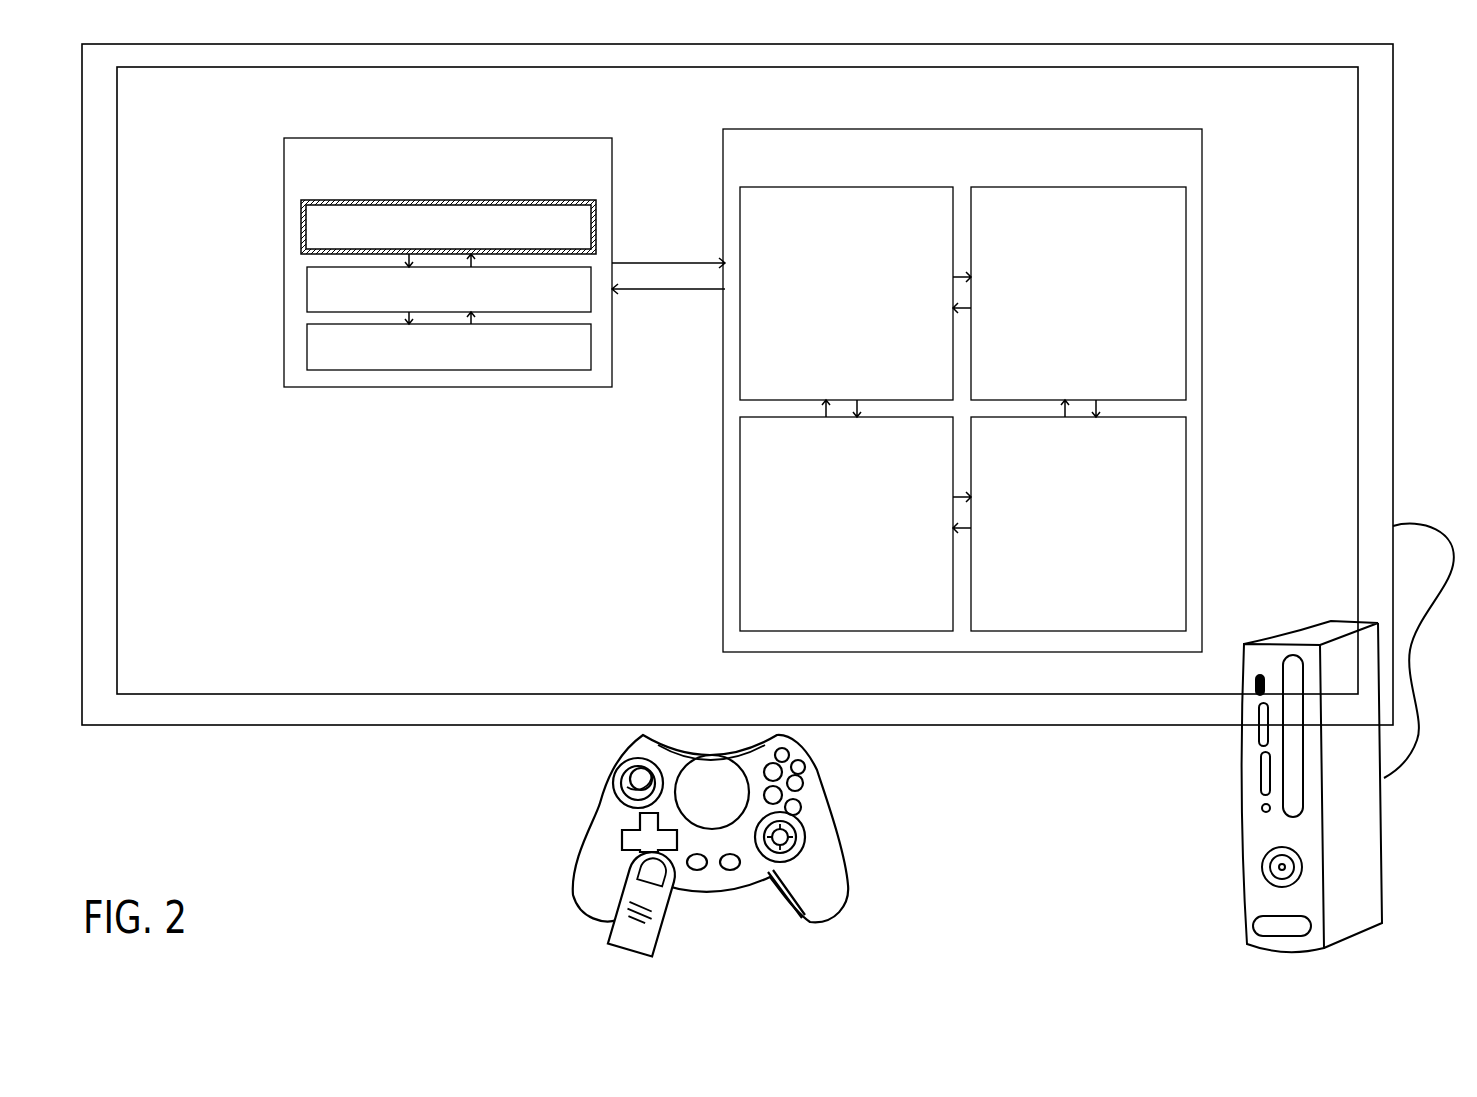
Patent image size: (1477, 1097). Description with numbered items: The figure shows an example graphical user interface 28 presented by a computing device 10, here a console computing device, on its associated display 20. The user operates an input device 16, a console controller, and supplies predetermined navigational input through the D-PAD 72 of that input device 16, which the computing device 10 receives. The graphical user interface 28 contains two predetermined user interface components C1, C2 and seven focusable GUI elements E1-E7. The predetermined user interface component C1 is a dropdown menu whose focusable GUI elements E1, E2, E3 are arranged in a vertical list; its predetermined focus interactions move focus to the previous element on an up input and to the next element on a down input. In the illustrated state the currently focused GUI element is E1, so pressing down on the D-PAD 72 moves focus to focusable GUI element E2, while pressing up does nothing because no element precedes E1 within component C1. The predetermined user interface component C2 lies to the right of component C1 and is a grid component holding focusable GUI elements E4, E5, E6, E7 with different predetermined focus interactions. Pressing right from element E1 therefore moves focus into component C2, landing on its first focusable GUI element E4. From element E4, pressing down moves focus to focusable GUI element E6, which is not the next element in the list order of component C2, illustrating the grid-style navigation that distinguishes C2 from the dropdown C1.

The computing device 10 is at (1251, 782).
The input device 16 is at (688, 846).
The display 20 is at (1374, 225).
The graphical user interface 28 is at (1307, 157).
The D-PAD 72 is at (627, 835).
The predetermined user interface component C1 is at (590, 155).
The predetermined user interface component C2 is at (1168, 155).
The focusable GUI element E1 is at (320, 227).
The focusable GUI element E2 is at (320, 294).
The focusable GUI element E3 is at (326, 352).
The focusable GUI element E4 is at (858, 318).
The focusable GUI element E5 is at (1090, 318).
The focusable GUI element E6 is at (858, 550).
The focusable GUI element E7 is at (1090, 550).